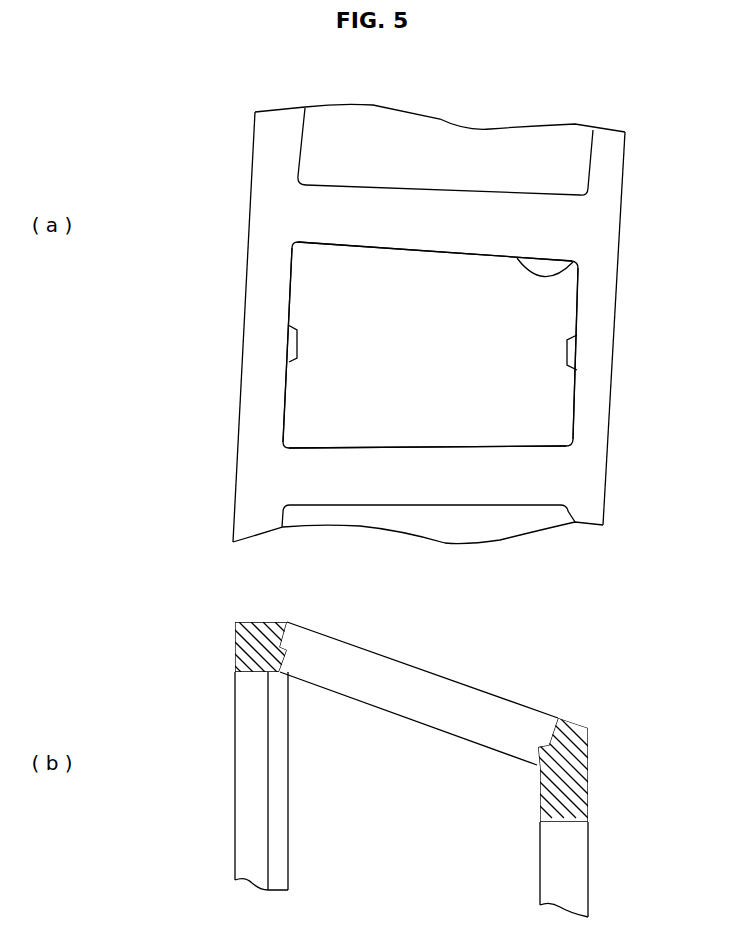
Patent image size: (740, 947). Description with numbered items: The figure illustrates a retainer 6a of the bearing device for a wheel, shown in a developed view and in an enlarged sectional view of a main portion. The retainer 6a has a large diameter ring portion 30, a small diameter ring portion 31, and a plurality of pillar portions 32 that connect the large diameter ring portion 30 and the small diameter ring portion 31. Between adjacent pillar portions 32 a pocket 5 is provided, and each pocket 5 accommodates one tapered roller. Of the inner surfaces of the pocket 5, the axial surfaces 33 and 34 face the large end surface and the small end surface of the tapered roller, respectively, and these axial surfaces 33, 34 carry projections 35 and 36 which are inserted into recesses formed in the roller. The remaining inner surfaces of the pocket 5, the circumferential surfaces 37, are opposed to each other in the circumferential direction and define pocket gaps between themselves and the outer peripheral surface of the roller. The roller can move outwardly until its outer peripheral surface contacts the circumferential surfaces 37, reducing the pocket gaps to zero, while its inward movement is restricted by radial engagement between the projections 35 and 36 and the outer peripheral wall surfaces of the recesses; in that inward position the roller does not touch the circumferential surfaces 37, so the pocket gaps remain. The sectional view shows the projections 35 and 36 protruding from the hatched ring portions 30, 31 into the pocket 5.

The pocket 5 is at (577, 262).
The retainer 6a is at (623, 441).
The large diameter ring portion 30 is at (242, 275).
The small diameter ring portion 31 is at (602, 197).
The pillar portion 32 is at (457, 222).
The axial surface opposed to large end surface 33 is at (291, 286).
The axial surface opposed to small end surface 34 is at (573, 410).
The projection 35 is at (298, 345).
The projection 36 is at (566, 352).
The circumferential surface 37 is at (445, 252).